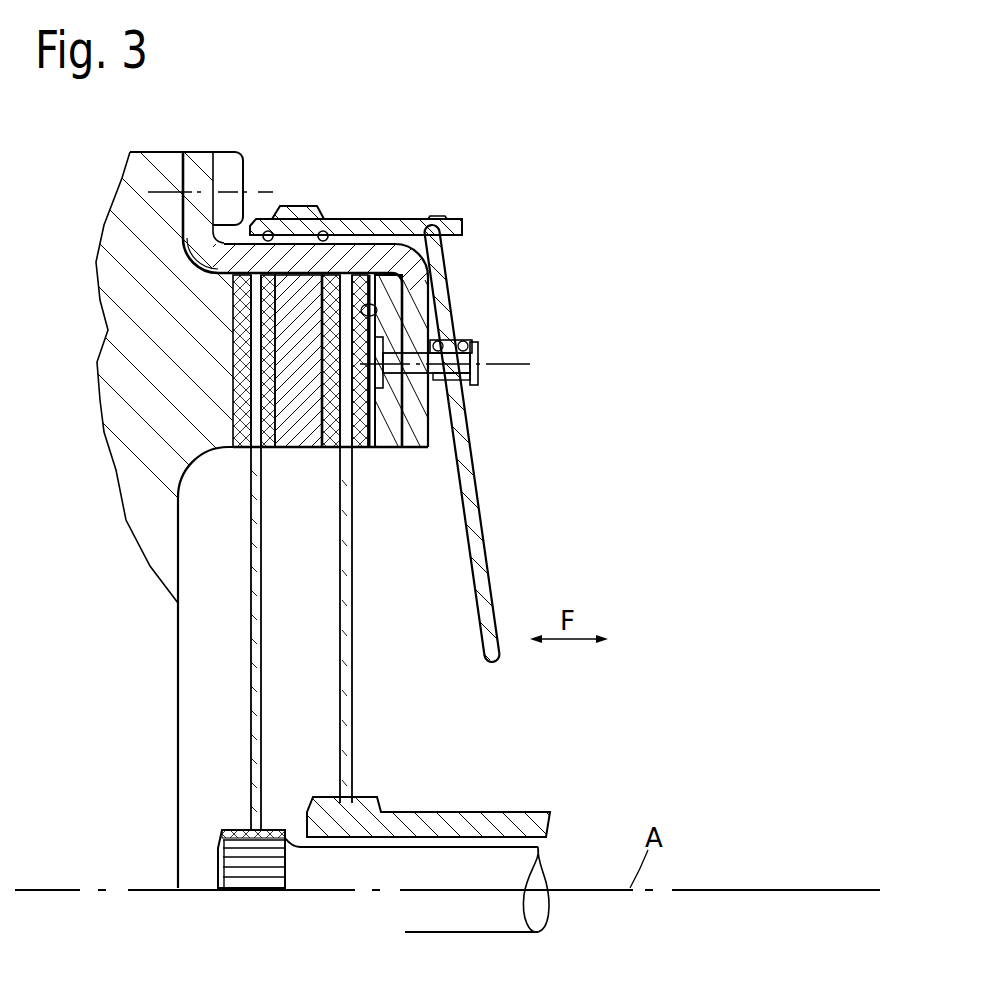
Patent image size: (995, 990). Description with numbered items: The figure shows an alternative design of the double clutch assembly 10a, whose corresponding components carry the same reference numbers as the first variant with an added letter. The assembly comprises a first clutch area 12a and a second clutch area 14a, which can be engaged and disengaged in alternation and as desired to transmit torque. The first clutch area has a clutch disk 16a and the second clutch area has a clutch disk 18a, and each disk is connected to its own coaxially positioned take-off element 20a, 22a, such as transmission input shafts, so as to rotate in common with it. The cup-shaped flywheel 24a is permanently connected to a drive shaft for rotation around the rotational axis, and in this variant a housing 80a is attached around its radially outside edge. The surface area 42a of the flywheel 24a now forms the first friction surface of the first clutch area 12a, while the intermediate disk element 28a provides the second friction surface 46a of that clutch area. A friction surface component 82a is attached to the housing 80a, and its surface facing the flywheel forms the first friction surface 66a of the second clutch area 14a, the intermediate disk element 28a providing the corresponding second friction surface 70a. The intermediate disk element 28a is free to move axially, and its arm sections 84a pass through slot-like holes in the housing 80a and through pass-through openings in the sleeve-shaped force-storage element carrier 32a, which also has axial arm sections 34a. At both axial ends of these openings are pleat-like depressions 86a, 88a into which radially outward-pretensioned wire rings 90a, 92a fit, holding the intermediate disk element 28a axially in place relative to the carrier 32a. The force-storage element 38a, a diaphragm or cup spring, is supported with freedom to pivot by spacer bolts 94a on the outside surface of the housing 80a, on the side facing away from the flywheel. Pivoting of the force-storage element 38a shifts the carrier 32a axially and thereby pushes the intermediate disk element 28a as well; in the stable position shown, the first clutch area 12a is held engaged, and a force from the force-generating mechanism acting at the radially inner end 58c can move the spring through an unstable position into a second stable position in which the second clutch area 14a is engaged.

The double clutch assembly 10a is at (421, 130).
The first clutch area 12a is at (196, 544).
The second clutch area 14a is at (389, 530).
The clutch disk 16a is at (220, 667).
The clutch disk 18a is at (390, 636).
The take-off element 20a is at (447, 918).
The take-off element 22a is at (550, 822).
The flywheel 24a is at (132, 344).
The intermediate disk element 28a is at (423, 220).
The force-storage element carrier 32a is at (385, 222).
The axial arm section 34a is at (460, 226).
The force-storage element 38a is at (483, 538).
The surface area 42a is at (238, 420).
The second friction surface 46a is at (258, 371).
The lever end 58c is at (497, 648).
The first friction surface 66a is at (380, 330).
The second friction surface 70a is at (402, 452).
The housing 80a is at (413, 292).
The friction surface component 82a is at (398, 426).
The arm section 84a is at (300, 212).
The pleat-like depression 86a is at (266, 231).
The pleat-like depression 88a is at (325, 232).
The wire ring 90a is at (265, 246).
The wire ring 92a is at (257, 283).
The spacer bolt 94a is at (470, 382).